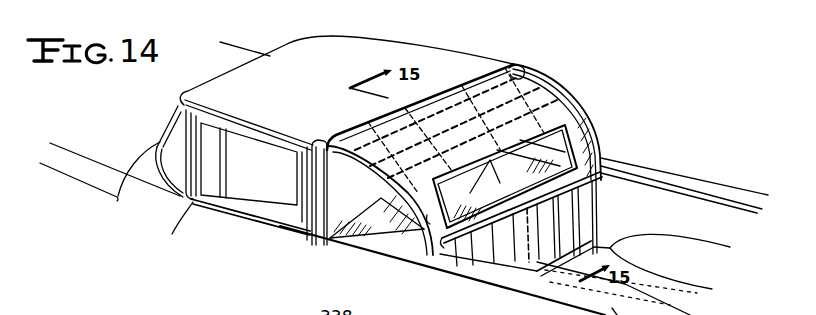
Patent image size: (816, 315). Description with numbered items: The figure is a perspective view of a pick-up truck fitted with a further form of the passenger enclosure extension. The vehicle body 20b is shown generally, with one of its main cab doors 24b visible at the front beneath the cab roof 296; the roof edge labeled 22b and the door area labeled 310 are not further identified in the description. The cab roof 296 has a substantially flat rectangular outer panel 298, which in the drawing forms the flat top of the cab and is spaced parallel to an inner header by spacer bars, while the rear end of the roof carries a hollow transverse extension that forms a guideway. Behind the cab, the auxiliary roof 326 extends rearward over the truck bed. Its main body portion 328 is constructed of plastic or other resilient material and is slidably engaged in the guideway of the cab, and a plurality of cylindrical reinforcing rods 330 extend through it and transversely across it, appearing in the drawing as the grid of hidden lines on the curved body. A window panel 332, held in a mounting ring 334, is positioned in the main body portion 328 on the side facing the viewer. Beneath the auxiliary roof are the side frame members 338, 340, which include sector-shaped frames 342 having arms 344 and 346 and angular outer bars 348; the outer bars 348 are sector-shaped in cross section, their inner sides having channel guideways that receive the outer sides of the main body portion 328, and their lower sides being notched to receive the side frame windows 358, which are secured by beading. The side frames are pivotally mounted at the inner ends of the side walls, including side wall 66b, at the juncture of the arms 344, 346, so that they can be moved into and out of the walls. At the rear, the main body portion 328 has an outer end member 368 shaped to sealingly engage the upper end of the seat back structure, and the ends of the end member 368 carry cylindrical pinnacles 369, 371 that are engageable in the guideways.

The vehicle body 20b is at (405, 37).
The cab roof edge 22b is at (268, 53).
The main cab door 24b is at (222, 238).
The side wall 66b is at (659, 202).
The cab roof 296 is at (444, 62).
The outer panel 298 is at (335, 57).
The door 310 is at (310, 218).
The auxiliary roof 326 is at (572, 90).
The main body portion 328 is at (536, 82).
The cylindrical reinforcing rods 330 is at (522, 71).
The window panel 332 is at (555, 150).
The mounting ring 334 is at (577, 157).
The side frame member 338 is at (361, 249).
The side frame member 340 is at (590, 106).
The sector-shaped frame 342 is at (441, 252).
The arm 344 is at (327, 186).
The arm 346 is at (383, 250).
The angular outer bar 348 is at (428, 214).
The side frame window 358 is at (347, 232).
The outer end member 368 is at (550, 189).
The cylindrical pinnacle 369 is at (442, 248).
The cylindrical pinnacle 371 is at (606, 159).